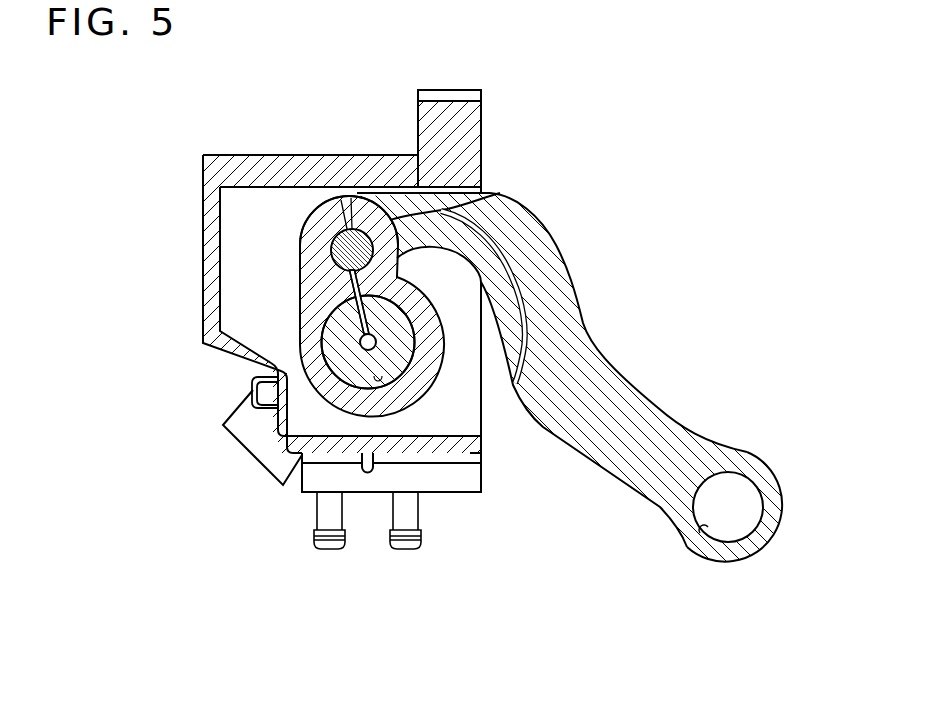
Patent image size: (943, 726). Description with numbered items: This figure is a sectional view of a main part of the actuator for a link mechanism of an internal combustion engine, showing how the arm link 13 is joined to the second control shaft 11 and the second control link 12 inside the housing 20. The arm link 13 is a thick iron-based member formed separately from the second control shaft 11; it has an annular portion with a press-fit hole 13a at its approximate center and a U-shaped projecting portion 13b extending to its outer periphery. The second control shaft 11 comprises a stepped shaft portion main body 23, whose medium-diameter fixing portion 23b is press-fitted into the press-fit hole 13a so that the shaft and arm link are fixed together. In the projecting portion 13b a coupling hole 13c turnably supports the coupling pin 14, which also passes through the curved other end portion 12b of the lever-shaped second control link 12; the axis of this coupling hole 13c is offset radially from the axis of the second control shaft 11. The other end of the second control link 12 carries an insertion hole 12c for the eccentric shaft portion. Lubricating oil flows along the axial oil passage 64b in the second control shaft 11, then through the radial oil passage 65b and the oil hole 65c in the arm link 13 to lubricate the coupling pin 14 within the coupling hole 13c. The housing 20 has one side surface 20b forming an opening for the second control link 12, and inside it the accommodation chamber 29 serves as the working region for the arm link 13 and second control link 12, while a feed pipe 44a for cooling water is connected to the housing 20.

The housing 20 is at (343, 147).
The one side surface 20b is at (481, 422).
The arm link 13 is at (318, 403).
The press-fit hole 13a is at (379, 385).
The projecting portion 13b is at (313, 243).
The coupling hole 13c is at (338, 245).
The second control shaft 11 is at (414, 352).
The axial oil passage 64b is at (364, 343).
The shaft portion main body 23 is at (355, 366).
The fixing portion 23b is at (355, 366).
The accommodation chamber 29 is at (262, 247).
The second control link 12 is at (656, 408).
The other end portion 12b is at (380, 207).
The insertion hole 12c is at (704, 531).
The coupling pin 14 is at (480, 190).
The oil hole 65c is at (450, 195).
The radial oil passage 65b is at (412, 297).
The feed pipe 44a is at (328, 552).